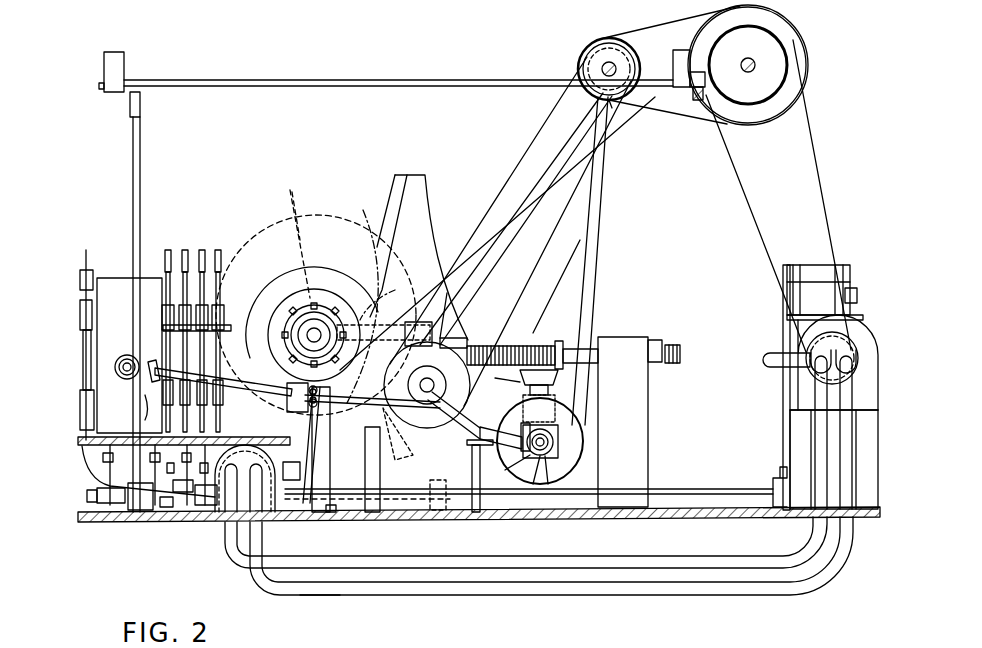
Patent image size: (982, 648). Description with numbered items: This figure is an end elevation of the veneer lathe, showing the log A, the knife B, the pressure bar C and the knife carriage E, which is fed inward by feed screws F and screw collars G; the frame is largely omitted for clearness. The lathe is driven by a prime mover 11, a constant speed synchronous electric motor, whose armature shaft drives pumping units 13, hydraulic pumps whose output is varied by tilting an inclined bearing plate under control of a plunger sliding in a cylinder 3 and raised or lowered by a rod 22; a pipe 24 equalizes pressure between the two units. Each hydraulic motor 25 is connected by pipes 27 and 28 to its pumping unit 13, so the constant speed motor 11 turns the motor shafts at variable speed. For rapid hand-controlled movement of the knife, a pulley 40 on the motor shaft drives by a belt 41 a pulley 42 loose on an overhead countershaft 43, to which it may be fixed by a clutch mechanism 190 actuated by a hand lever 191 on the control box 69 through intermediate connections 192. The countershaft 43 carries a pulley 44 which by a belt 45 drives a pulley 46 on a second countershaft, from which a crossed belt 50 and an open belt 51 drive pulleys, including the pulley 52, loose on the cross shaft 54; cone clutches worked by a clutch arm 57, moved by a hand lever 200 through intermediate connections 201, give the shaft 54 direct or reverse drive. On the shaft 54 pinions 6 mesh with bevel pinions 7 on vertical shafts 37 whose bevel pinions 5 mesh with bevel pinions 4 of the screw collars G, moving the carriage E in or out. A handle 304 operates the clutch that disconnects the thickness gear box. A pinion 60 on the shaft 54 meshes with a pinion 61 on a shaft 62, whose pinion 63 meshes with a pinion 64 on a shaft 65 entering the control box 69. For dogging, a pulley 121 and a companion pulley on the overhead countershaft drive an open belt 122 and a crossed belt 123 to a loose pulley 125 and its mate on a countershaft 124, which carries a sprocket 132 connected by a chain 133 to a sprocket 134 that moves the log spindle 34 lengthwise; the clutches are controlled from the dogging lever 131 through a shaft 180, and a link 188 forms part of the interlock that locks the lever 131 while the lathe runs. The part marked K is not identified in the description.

The cylinder 3 is at (860, 330).
The bevel pinion 4 is at (580, 348).
The bevel pinion 5 is at (562, 378).
The pinion 6 is at (552, 450).
The bevel pinion 7 is at (560, 445).
The prime mover 11 is at (805, 345).
The pumping unit 13 is at (810, 375).
The rod 22 is at (852, 288).
The pipe 24 is at (763, 358).
The hydraulic motor 25 is at (275, 507).
The pipe 27 is at (335, 597).
The pipe 28 is at (410, 568).
The log spindle 34 is at (292, 320).
The vertical shaft 37 is at (555, 393).
The pulley 40 is at (830, 380).
The belt 41 is at (820, 175).
The pulley 42 is at (790, 92).
The countershaft 43 is at (760, 63).
The pulley 44 is at (597, 62).
The belt 45 is at (630, 38).
The pulley 46 is at (630, 98).
The crossed belt 50 is at (590, 218).
The open belt 51 is at (610, 252).
The pulley 52 is at (583, 440).
The cross shaft 54 is at (545, 456).
The clutch arm 57 is at (510, 380).
The pinion 60 is at (537, 456).
The pinion 61 is at (500, 470).
The shaft 62 is at (228, 368).
The pinion 63 is at (145, 405).
The pinion 64 is at (140, 378).
The shaft 65 is at (127, 355).
The control box 69 is at (118, 278).
The pulley 121 is at (597, 92).
The open belt 122 is at (520, 172).
The crossed belt 123 is at (505, 218).
The countershaft 124 is at (470, 440).
The loose pulley 125 is at (510, 335).
The dogging lever 131 is at (202, 252).
The sprocket 132 is at (427, 404).
The chain 133 is at (395, 326).
The sprocket 134 is at (327, 268).
The shaft 180 is at (332, 520).
The link 188 is at (147, 472).
The clutch mechanism 190 is at (698, 100).
The hand lever 191 is at (168, 252).
The intermediate connections 192 is at (140, 100).
The hand lever 200 is at (185, 252).
The intermediate connections 201 is at (200, 510).
The handle 304 is at (232, 248).
The log A is at (290, 207).
The knife B is at (371, 445).
The pressure bar C is at (384, 299).
The knife carriage E is at (440, 320).
The feed screw F is at (530, 343).
The screw collar G is at (605, 335).
The assembly K is at (86, 262).